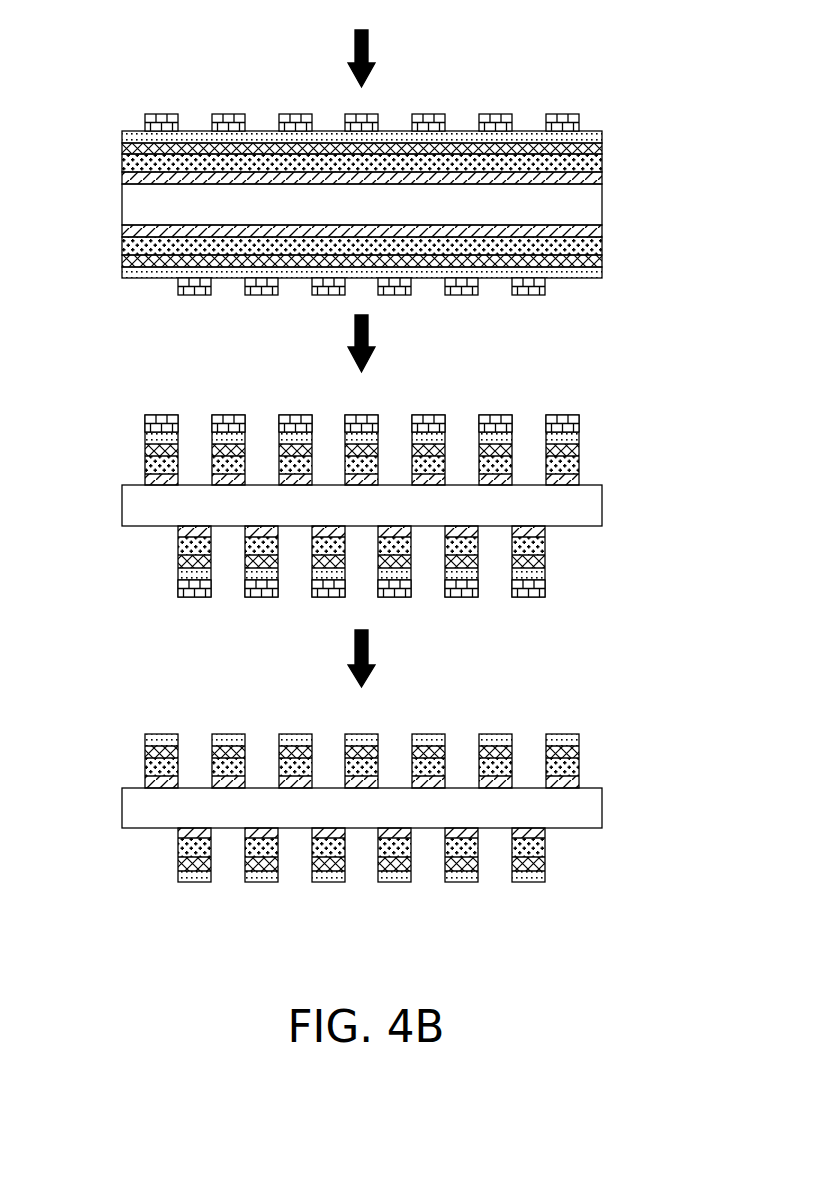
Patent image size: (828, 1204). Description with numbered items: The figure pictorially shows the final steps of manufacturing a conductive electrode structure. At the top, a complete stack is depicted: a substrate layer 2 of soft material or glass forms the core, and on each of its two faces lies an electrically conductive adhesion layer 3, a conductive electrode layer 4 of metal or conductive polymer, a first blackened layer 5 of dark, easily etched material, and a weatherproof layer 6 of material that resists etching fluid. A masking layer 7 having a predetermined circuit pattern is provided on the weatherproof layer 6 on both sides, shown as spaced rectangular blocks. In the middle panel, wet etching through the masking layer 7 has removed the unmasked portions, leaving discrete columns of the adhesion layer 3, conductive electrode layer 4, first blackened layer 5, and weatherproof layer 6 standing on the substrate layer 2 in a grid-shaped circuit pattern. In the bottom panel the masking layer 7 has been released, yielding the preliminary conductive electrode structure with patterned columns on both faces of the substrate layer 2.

The substrate layer 2 is at (591, 205).
The adhesion layer 3 is at (127, 178).
The conductive electrode layer 4 is at (127, 250).
The first blackened layer 5 is at (126, 148).
The weatherproof layer 6 is at (589, 137).
The masking layer 7 is at (157, 116).